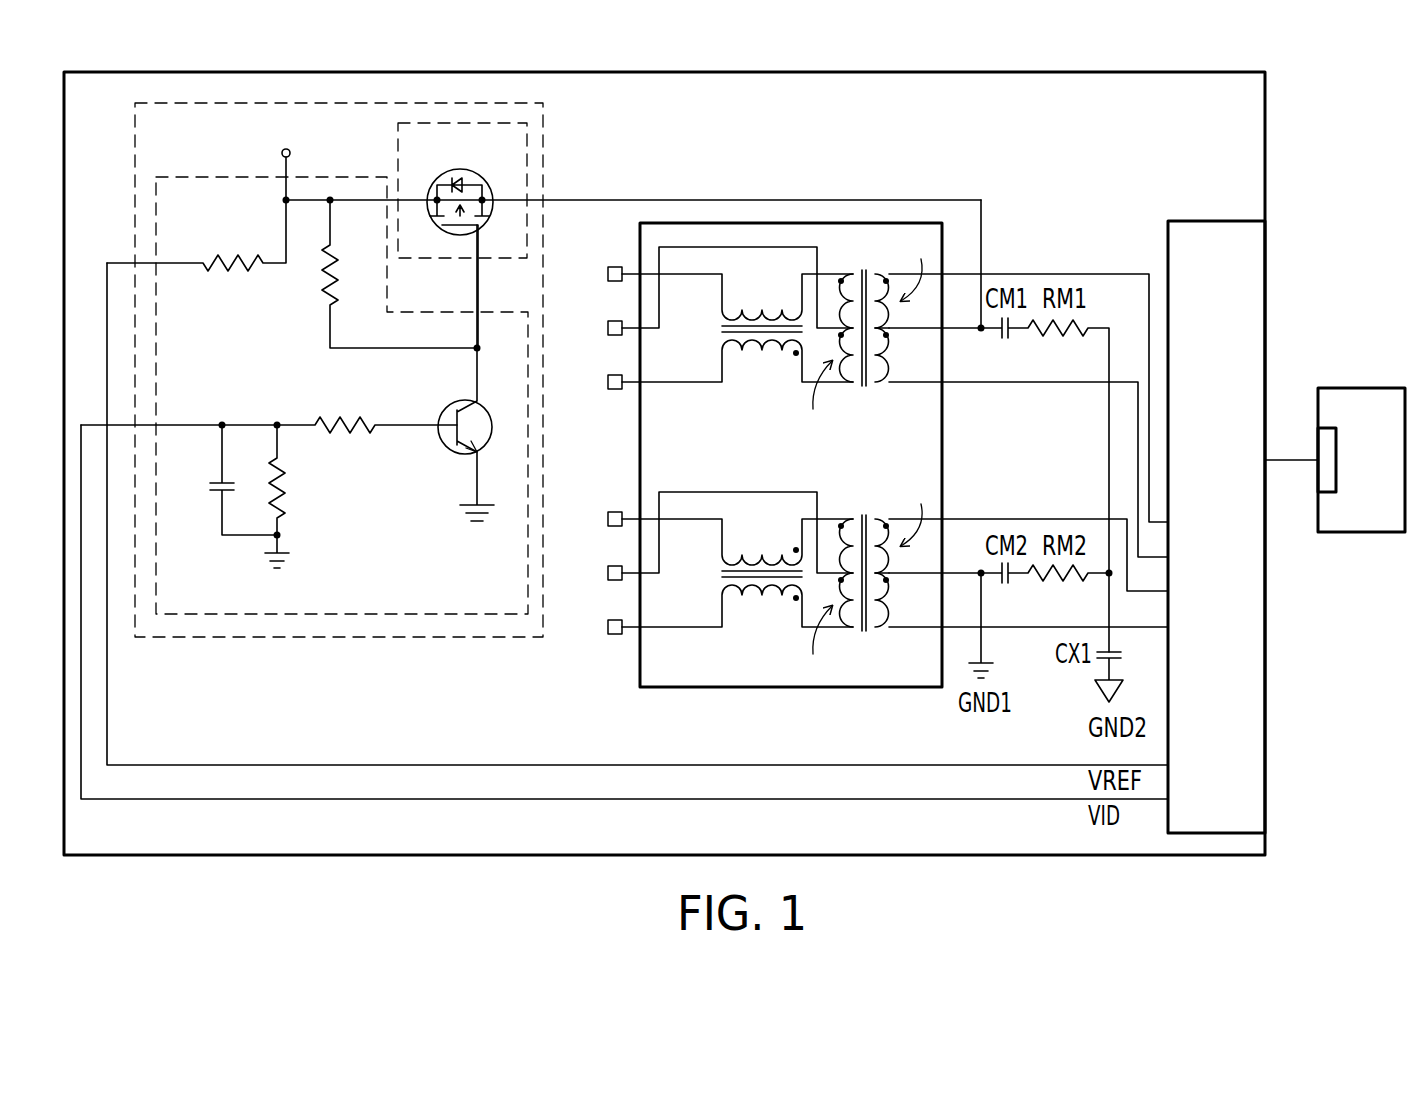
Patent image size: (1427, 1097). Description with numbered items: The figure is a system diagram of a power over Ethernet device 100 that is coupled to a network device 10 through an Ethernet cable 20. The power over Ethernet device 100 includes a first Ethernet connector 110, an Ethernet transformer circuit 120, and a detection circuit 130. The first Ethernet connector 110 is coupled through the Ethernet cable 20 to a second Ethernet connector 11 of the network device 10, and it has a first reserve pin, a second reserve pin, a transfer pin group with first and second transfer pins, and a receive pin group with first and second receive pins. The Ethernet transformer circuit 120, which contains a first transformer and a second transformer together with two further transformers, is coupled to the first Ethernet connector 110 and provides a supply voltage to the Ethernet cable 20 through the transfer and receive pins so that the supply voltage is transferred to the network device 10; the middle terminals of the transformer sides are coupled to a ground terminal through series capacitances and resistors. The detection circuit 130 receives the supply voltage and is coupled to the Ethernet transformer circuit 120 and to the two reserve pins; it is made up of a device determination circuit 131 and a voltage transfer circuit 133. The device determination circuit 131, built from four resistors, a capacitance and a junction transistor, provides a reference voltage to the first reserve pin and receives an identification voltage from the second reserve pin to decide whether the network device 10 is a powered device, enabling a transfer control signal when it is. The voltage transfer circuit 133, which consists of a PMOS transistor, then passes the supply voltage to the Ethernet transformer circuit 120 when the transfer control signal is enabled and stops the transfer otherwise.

The power over Ethernet device 100 is at (1265, 121).
The first Ethernet connector 110 is at (1228, 221).
The Ethernet transformer circuit 120 is at (690, 688).
The detection circuit 130 is at (513, 638).
The device determination circuit 131 is at (422, 615).
The voltage transfer circuit 133 is at (543, 148).
The network device 10 is at (1380, 533).
The second Ethernet connector 11 is at (1338, 437).
The Ethernet cable 20 is at (1297, 462).